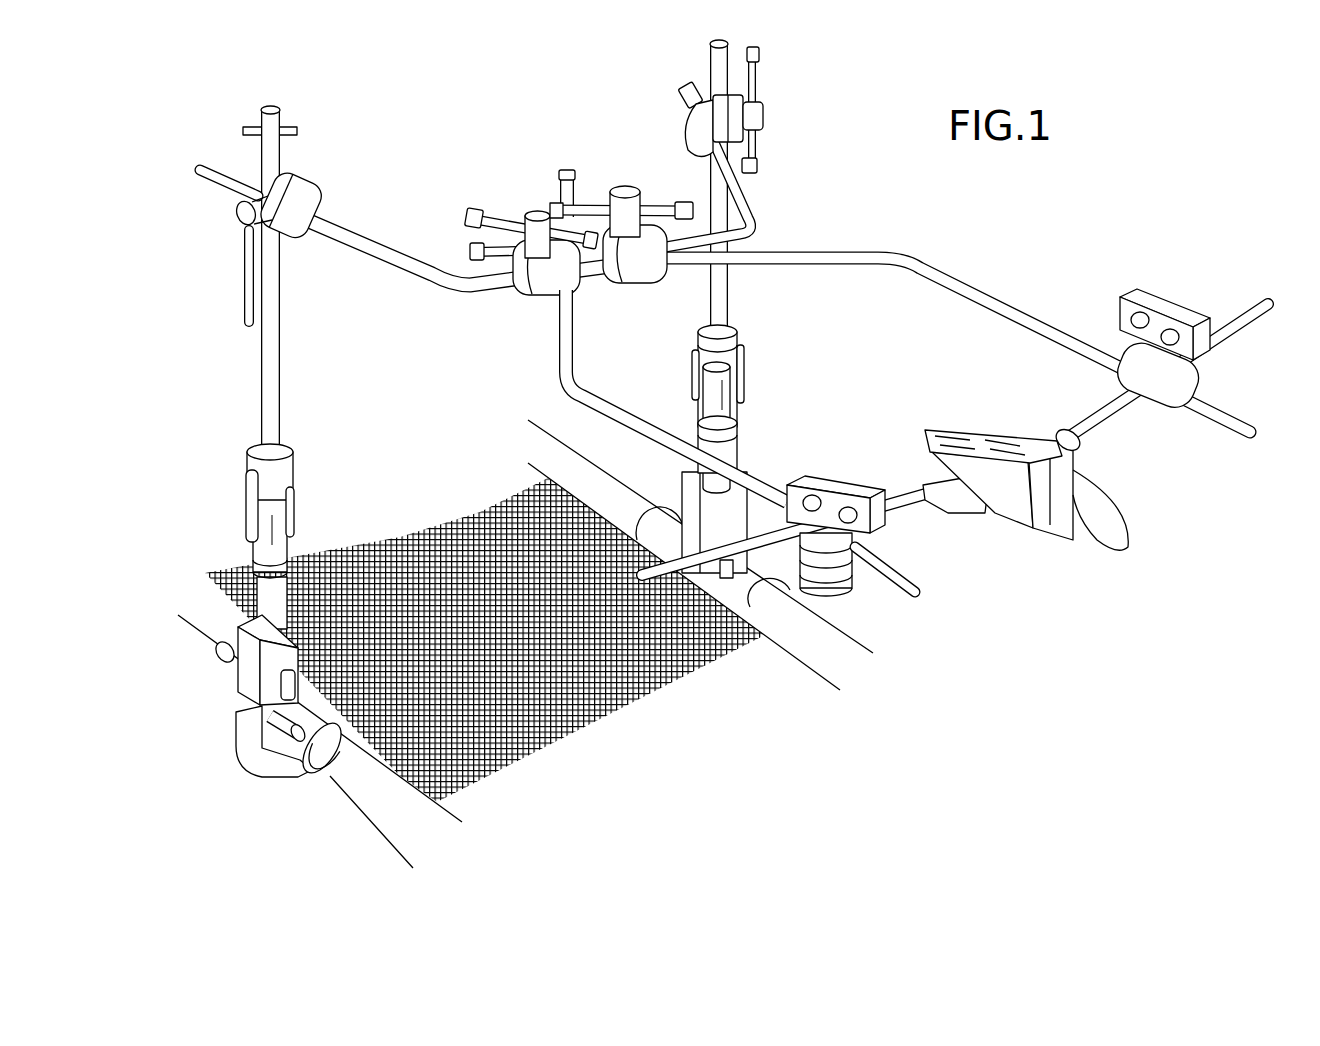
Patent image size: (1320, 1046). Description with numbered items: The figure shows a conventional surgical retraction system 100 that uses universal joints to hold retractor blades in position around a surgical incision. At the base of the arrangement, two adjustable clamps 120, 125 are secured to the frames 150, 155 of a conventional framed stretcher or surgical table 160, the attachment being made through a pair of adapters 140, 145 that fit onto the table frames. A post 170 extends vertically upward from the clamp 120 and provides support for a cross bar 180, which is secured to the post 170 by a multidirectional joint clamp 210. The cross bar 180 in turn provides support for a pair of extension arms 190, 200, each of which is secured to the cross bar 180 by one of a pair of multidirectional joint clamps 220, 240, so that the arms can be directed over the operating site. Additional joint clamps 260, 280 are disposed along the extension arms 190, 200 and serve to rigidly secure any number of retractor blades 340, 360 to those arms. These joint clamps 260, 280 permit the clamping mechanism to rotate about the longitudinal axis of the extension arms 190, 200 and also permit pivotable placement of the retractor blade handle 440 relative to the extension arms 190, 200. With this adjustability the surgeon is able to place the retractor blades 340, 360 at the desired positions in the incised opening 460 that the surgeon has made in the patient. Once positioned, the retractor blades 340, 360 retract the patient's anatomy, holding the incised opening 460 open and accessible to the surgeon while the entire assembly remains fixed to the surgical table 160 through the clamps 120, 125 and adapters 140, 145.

The surgical retraction system 100 is at (1052, 193).
The adjustable clamp 120 is at (238, 521).
The adjustable clamp 125 is at (750, 360).
The adapter 140 is at (317, 772).
The adapter 145 is at (818, 587).
The frame 150 is at (363, 790).
The frame 155 is at (854, 630).
The surgical table 160 is at (650, 722).
The post 170 is at (262, 372).
The cross bar 180 is at (360, 243).
The extension arm 190 is at (563, 360).
The extension arm 200 is at (822, 253).
The multidirectional joint clamp 210 is at (293, 197).
The multidirectional joint clamp 220 is at (537, 216).
The multidirectional joint clamp 240 is at (627, 192).
The joint clamp 260 is at (822, 490).
The joint clamp 280 is at (1147, 310).
The retractor blade 340 is at (967, 500).
The retractor blade 360 is at (1052, 490).
The retractor blade handle 440 is at (907, 513).
The incised opening 460 is at (980, 458).